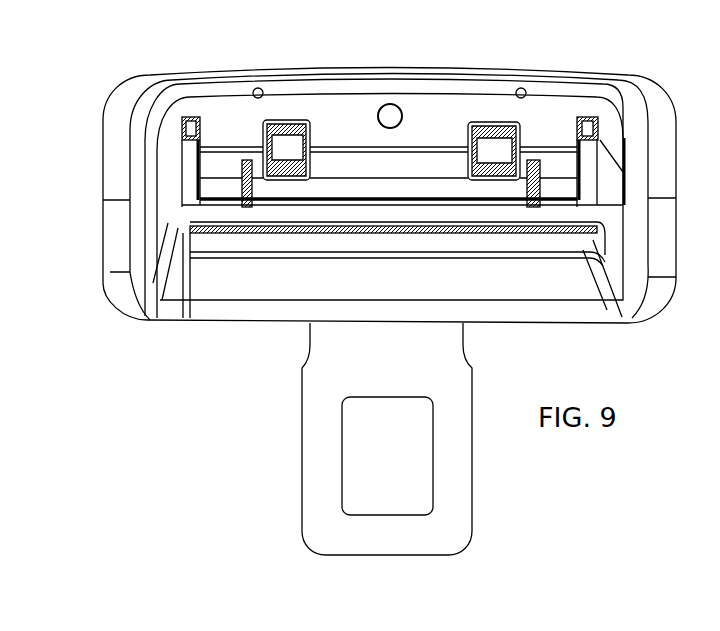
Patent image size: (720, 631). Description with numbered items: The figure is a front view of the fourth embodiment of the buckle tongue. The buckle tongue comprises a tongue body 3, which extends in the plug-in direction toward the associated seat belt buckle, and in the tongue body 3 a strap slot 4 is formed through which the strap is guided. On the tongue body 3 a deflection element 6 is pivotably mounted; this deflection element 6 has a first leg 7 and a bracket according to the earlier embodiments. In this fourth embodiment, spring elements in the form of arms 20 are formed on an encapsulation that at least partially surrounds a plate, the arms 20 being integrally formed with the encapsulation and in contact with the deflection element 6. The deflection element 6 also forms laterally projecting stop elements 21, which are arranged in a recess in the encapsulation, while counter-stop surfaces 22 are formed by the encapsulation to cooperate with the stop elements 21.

The first leg 7 is at (106, 81).
The tongue body 3 is at (189, 97).
The counter-stop surfaces 22 is at (155, 145).
The stop elements 21 is at (182, 160).
The arms 20 is at (210, 167).
The strap slot 4 is at (268, 202).
The deflection element 6 is at (190, 213).